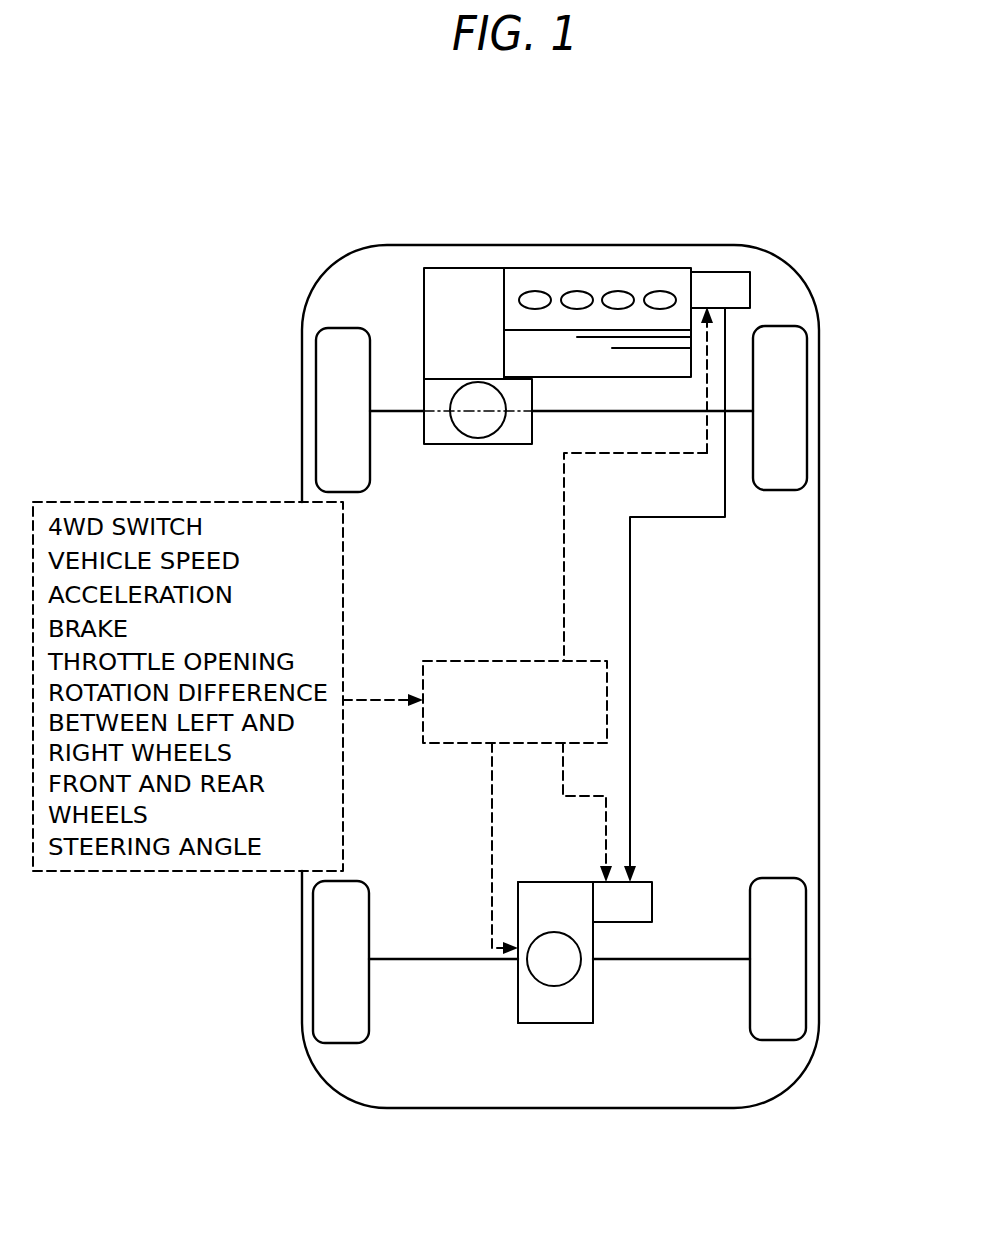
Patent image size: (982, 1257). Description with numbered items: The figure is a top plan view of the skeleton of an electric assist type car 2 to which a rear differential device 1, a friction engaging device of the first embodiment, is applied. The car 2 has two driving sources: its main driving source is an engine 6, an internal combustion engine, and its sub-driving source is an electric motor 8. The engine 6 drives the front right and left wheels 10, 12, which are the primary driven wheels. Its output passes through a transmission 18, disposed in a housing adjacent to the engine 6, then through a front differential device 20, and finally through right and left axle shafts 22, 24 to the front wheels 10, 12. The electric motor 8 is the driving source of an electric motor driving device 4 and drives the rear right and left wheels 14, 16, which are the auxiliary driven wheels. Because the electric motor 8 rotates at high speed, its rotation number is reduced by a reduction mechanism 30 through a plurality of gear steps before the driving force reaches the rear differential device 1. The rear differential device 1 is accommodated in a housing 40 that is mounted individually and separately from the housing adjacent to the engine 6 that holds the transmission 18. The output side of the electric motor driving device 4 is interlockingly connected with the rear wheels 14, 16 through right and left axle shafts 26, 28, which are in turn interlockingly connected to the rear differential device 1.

The rear differential device 1 is at (555, 987).
The electric assist type car 2 is at (743, 205).
The electric motor driving device 4 is at (647, 872).
The engine 6 is at (602, 277).
The electric motor 8 is at (645, 904).
The front wheel 10 is at (342, 328).
The front wheel 12 is at (780, 326).
The rear wheel 14 is at (341, 1035).
The rear wheel 16 is at (783, 1033).
The transmission 18 is at (458, 288).
The front differential device 20 is at (480, 425).
The axle shaft 22 is at (400, 412).
The axle shaft 24 is at (660, 411).
The axle shaft 26 is at (422, 958).
The axle shaft 28 is at (700, 958).
The reduction mechanism 30 is at (553, 874).
The housing 40 is at (586, 1013).